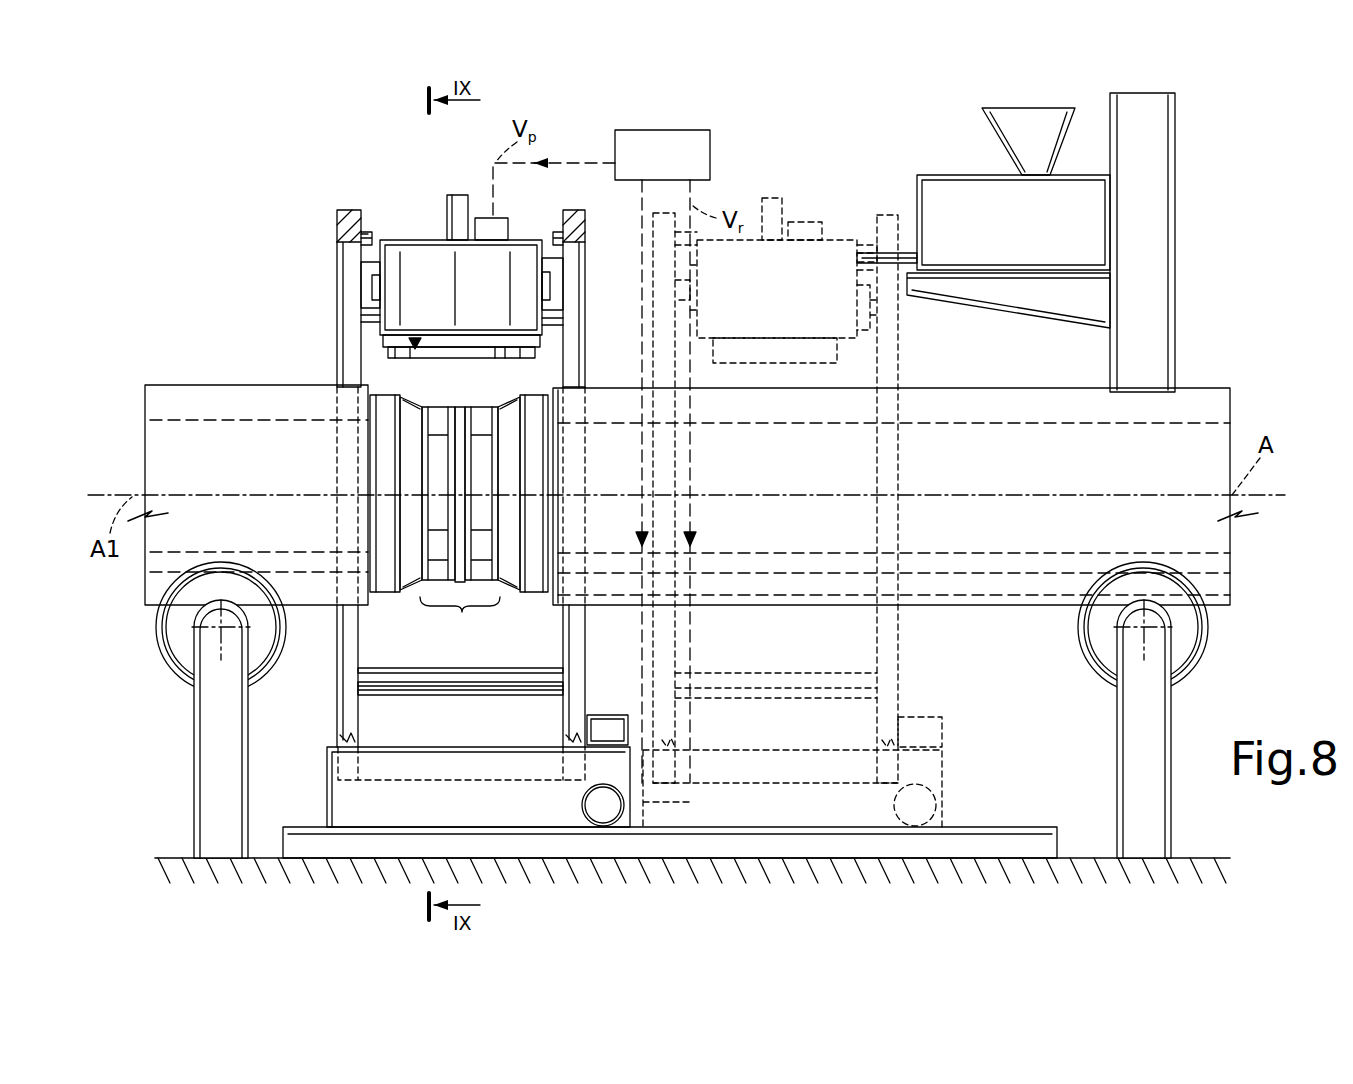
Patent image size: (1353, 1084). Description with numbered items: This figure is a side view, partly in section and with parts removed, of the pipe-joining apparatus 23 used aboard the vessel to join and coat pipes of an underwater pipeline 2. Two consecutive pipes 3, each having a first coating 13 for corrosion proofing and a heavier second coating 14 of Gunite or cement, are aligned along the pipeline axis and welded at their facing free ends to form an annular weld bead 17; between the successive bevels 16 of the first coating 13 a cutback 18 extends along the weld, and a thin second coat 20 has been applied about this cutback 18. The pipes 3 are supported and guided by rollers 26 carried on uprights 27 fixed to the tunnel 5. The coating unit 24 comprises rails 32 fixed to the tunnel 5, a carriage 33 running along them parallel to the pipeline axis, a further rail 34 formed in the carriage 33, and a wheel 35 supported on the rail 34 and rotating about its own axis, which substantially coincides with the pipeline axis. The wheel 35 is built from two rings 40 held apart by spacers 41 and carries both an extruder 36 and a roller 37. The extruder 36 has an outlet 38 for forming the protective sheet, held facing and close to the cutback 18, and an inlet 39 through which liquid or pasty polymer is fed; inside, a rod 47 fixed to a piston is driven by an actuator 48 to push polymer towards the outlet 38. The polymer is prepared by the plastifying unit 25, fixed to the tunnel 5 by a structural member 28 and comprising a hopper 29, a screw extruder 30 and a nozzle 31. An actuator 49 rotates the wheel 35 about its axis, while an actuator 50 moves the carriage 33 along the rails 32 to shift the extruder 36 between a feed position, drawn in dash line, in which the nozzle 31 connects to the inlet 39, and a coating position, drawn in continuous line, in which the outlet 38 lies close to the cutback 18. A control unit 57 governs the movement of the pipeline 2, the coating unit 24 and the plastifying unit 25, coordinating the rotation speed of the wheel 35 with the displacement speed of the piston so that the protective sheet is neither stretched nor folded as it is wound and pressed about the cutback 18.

The underwater pipeline 2 is at (1205, 367).
The pipe 3 is at (190, 356).
The tunnel 5 is at (1192, 818).
The first coating 13 is at (380, 604).
The second coating 14 is at (250, 402).
The bevel 16 is at (410, 594).
The annular weld bead 17 is at (457, 410).
The cutback 18 is at (462, 616).
The second coat 20 is at (435, 410).
The pipe-joining apparatus 23 is at (400, 178).
The coating unit 24 is at (506, 198).
The plastifying unit 25 is at (950, 140).
The roller 26 is at (163, 620).
The upright 27 is at (205, 770).
The structural member 28 is at (1160, 235).
The hopper 29 is at (1010, 130).
The screw extruder 30 is at (940, 180).
The nozzle 31 is at (905, 253).
The rail 32 is at (757, 855).
The carriage 33 is at (337, 812).
The further rail 34 is at (543, 774).
The wheel 35 is at (295, 326).
The extruder 36 is at (420, 236).
The roller 37 is at (505, 353).
The outlet 38 is at (413, 351).
The inlet 39 is at (573, 256).
The ring 40 is at (347, 297).
The spacer 41 is at (550, 690).
The rod 47 is at (448, 215).
The actuator 48 is at (478, 216).
The actuator 49 is at (612, 712).
The actuator 50 is at (600, 800).
The control unit 57 is at (615, 145).